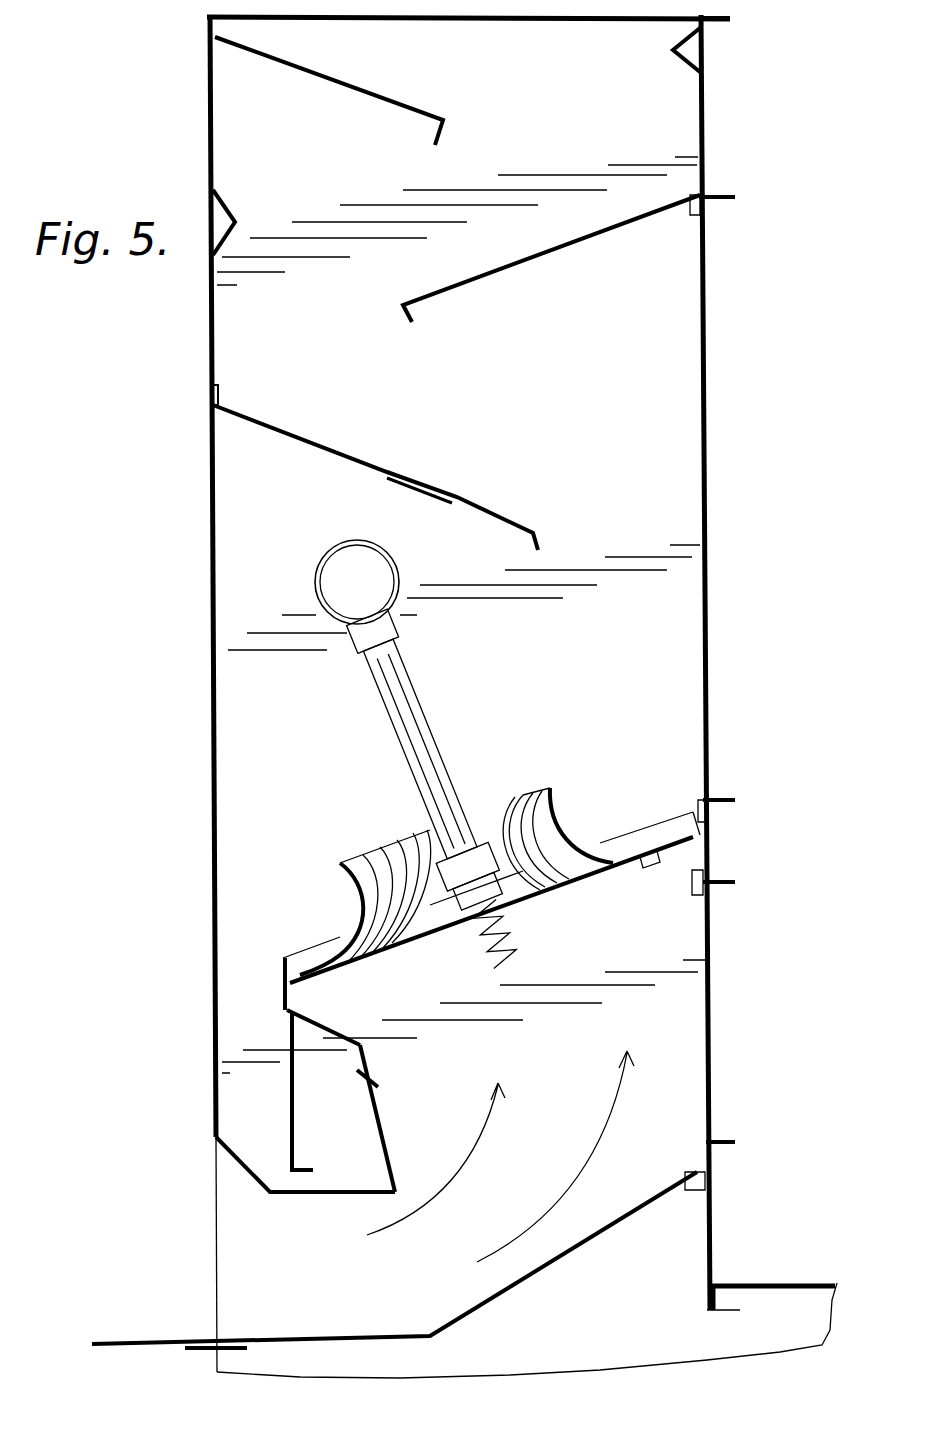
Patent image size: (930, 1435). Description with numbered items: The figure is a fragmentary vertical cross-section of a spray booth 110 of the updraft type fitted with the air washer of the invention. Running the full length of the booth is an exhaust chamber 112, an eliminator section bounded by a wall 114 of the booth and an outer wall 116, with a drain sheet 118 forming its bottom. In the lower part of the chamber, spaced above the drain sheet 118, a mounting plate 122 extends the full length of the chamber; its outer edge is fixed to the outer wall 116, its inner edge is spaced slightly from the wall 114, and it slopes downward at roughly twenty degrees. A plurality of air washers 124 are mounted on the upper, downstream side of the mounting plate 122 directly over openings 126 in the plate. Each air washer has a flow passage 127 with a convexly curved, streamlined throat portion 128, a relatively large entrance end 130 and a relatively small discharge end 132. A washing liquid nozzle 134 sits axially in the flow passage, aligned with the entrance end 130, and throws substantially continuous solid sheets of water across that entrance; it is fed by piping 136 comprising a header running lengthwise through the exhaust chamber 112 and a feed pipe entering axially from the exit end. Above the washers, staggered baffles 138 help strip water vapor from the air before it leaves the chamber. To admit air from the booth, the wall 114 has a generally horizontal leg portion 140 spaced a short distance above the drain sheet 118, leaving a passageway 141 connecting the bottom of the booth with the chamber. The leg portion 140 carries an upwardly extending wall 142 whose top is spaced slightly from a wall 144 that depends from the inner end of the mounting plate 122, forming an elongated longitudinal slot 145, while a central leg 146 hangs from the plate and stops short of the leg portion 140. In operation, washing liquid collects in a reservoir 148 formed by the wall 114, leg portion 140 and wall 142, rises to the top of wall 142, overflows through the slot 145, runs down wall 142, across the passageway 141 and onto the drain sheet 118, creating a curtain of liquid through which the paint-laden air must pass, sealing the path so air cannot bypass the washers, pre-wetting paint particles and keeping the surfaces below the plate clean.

The spray booth 110 is at (160, 677).
The exhaust chamber 112 is at (668, 440).
The wall 114 is at (213, 322).
The outer wall 116 is at (705, 508).
The drain sheet 118 is at (590, 1237).
The mounting plate 122 is at (678, 828).
The air washer 124 is at (566, 790).
The opening 126 is at (657, 853).
The flow passage 127 is at (527, 833).
The throat portion 128 is at (392, 862).
The entrance end 130 is at (613, 867).
The discharge end 132 is at (550, 787).
The washing liquid nozzle 134 is at (493, 927).
The piping 136 is at (390, 592).
The baffle 138 is at (355, 88).
The leg portion 140 is at (308, 1195).
The passageway 141 is at (332, 1298).
The wall 142 is at (380, 1140).
The wall 144 is at (347, 1032).
The slot 145 is at (370, 1090).
The central leg 146 is at (295, 1132).
The reservoir 148 is at (304, 1082).